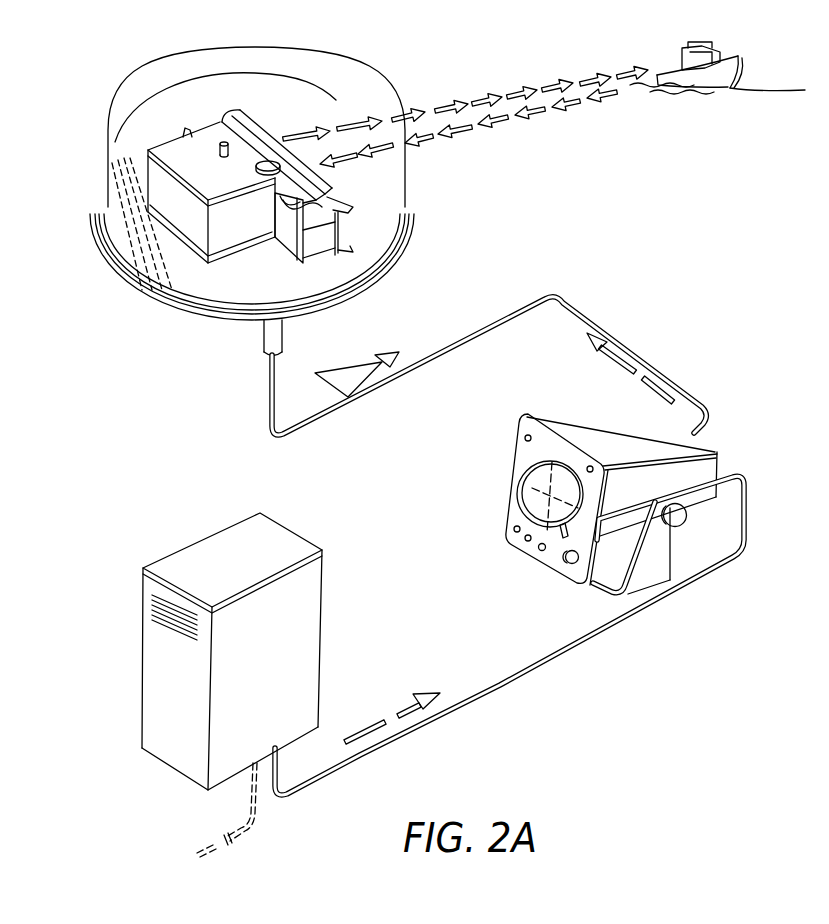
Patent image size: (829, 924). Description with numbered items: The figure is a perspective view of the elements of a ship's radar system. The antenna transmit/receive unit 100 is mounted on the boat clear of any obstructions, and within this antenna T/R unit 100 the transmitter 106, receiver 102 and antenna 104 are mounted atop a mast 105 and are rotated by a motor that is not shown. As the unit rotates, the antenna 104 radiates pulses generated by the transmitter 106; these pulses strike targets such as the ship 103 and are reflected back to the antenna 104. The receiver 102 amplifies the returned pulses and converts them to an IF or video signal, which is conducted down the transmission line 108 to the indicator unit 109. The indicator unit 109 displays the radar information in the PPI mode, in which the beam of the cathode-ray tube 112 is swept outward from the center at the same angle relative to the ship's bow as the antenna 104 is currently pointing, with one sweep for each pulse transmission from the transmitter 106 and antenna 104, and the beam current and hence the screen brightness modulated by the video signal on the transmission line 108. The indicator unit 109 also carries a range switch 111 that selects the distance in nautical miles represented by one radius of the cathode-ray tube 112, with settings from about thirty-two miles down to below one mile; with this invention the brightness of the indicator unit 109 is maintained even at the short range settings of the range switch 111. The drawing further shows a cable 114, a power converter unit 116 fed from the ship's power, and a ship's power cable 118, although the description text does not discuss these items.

The antenna transmit/receive unit 100 is at (347, 37).
The receiver 102 is at (330, 188).
The ship 103 is at (742, 65).
The antenna 104 is at (362, 239).
The mast 105 is at (268, 338).
The transmitter 106 is at (180, 220).
The transmission line 108 is at (490, 330).
The indicator unit 109 is at (522, 437).
The range switch 111 is at (546, 551).
The cathode-ray tube 112 is at (538, 495).
The cable from power converter to indicator 114 is at (717, 573).
The power converter unit 116 is at (342, 697).
The ship's power cable 118 is at (232, 840).